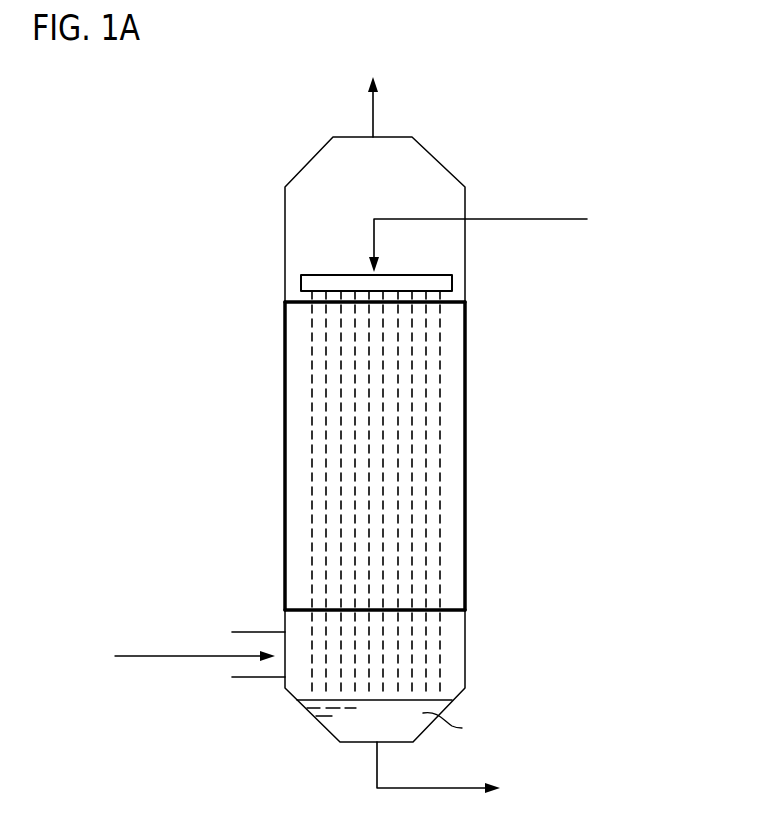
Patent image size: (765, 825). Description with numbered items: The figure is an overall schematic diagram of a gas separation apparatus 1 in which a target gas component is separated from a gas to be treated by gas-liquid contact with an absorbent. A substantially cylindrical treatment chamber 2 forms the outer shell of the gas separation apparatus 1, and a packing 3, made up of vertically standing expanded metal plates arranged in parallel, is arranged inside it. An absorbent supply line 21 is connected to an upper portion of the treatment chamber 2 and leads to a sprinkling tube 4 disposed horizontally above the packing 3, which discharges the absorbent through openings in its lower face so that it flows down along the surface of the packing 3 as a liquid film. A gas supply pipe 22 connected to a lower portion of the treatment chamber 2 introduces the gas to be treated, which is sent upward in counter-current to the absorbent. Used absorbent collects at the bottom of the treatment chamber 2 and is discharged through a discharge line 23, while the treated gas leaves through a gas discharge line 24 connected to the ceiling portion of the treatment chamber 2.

The gas separation apparatus 1 is at (236, 149).
The treatment chamber 2 is at (467, 245).
The packing 3 is at (450, 297).
The sprinkling tube 4 is at (330, 275).
The absorbent supply line 21 is at (527, 217).
The gas supply pipe 22 is at (262, 630).
The discharge line 23 is at (380, 765).
The gas discharge line 24 is at (375, 110).